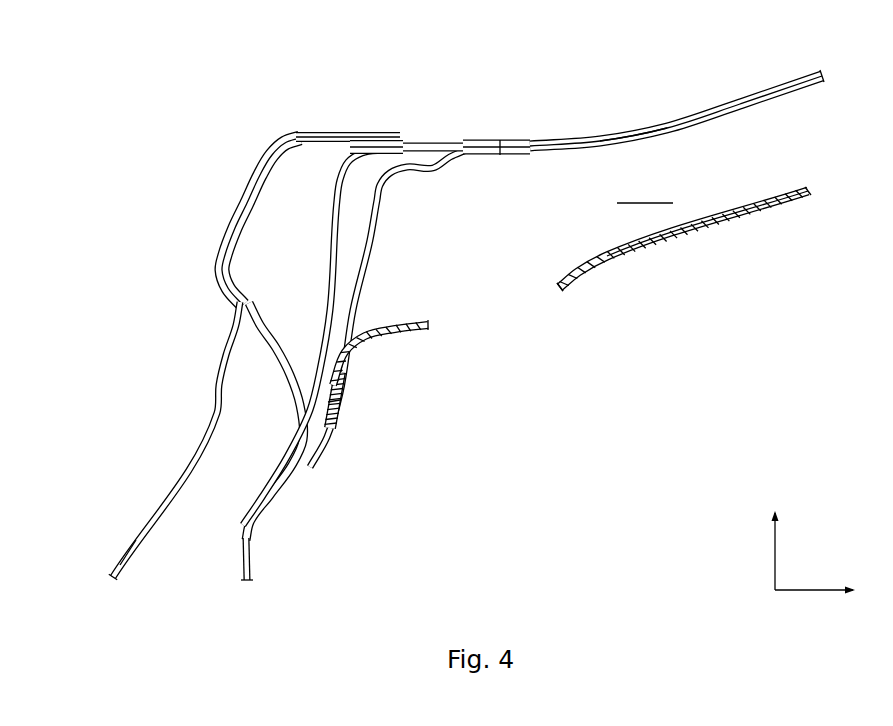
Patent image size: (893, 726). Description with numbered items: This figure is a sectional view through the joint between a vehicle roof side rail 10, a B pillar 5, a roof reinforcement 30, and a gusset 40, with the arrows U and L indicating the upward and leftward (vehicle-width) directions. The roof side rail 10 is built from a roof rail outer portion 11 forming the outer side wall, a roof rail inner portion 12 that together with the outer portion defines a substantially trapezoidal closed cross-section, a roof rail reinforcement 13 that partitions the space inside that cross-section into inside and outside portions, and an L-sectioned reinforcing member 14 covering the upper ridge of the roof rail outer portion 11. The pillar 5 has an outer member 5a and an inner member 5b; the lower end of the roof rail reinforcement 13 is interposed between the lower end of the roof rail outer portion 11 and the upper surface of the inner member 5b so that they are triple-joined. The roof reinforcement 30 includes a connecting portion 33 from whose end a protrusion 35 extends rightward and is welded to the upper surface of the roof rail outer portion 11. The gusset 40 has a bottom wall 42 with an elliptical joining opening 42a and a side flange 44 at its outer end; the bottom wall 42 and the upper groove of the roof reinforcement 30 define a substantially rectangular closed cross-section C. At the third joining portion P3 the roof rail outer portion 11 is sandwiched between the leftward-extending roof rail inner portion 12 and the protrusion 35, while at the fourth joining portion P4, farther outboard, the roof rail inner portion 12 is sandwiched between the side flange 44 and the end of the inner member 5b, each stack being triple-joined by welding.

The B pillar 5 is at (135, 511).
The outer member 5a is at (133, 541).
The inner member 5b is at (254, 558).
The roof side rail 10 is at (262, 146).
The roof rail outer portion 11 is at (271, 356).
The roof rail inner portion 12 is at (360, 273).
The roof rail reinforcement 13 is at (333, 268).
The reinforcing member 14 is at (292, 133).
The roof reinforcement 30 is at (767, 90).
The connecting portion 33 is at (660, 122).
The protrusion 35 is at (487, 137).
The gusset 40 is at (769, 232).
The bottom wall 42 is at (683, 239).
The opening 42a is at (553, 288).
The side flange 44 is at (334, 408).
The third joining portion P3 is at (500, 140).
The fourth joining portion P4 is at (336, 402).
The closed cross-section C is at (645, 186).
The upward direction U is at (775, 550).
The leftward direction L is at (817, 590).